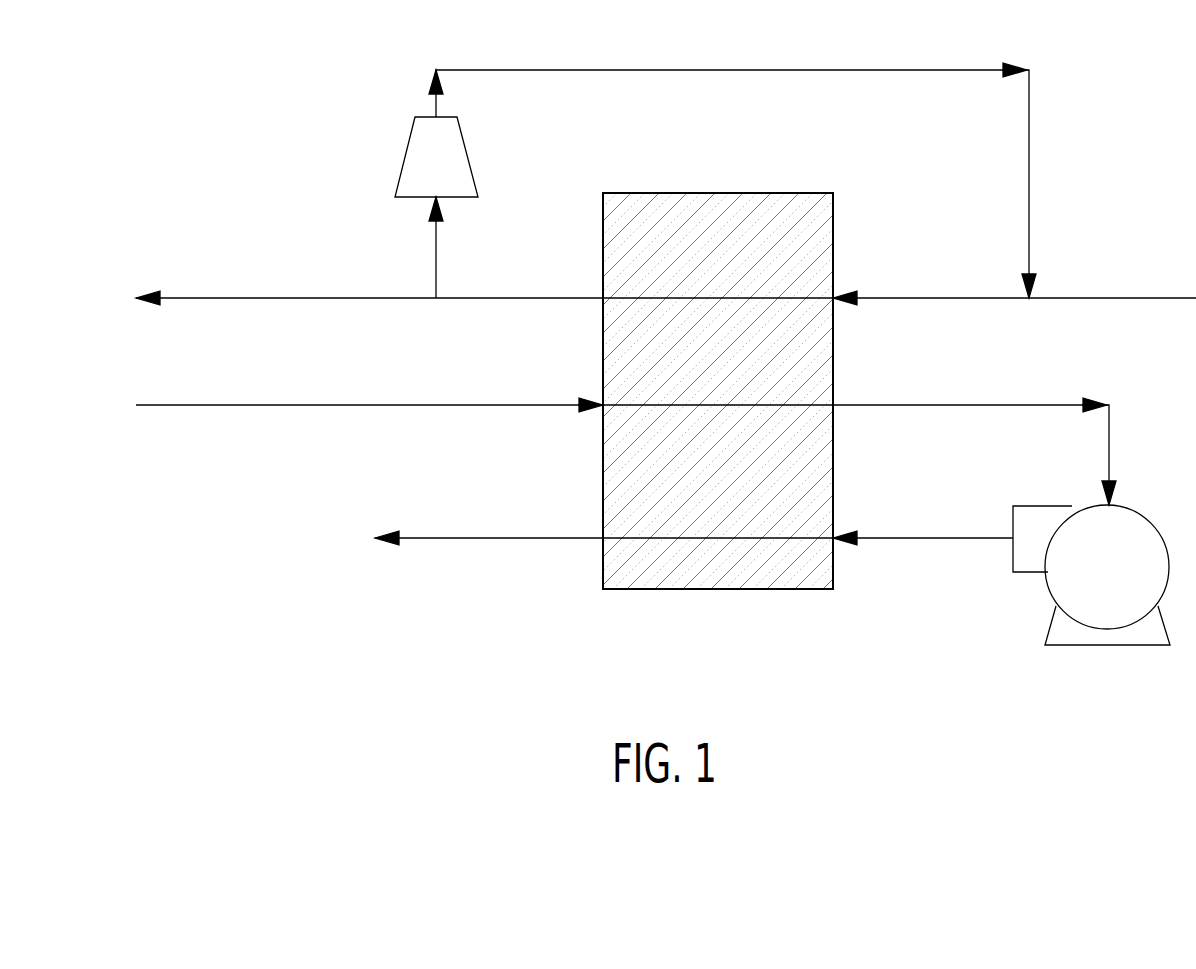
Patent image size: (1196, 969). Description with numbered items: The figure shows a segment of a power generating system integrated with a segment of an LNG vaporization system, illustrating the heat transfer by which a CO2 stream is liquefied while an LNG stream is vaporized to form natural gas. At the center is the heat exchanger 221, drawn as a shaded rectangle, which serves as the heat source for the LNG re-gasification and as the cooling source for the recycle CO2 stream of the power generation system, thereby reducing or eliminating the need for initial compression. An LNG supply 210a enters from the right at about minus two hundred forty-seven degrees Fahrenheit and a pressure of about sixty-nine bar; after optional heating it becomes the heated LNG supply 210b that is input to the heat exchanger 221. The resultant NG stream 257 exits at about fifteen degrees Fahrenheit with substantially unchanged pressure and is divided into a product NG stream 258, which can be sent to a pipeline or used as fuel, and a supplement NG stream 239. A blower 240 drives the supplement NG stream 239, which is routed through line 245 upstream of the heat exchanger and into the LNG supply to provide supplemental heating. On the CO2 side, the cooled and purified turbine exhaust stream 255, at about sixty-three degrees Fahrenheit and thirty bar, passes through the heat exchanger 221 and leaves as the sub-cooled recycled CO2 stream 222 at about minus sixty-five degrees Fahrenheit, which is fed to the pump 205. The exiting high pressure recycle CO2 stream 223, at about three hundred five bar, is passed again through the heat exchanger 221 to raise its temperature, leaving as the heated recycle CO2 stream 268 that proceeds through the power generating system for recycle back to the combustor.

The pump 205 is at (1120, 582).
The LNG supply 210a is at (1108, 298).
The heated LNG supply 210b is at (978, 298).
The heat exchanger 221 is at (740, 371).
The sub-cooled recycled CO2 stream 222 is at (963, 405).
The high pressure recycle CO2 stream 223 is at (928, 538).
The supplement NG stream 239 is at (434, 264).
The blower 240 is at (450, 170).
The expanded stream 245 is at (638, 70).
The cooled and purified turbine exhaust stream 255 is at (333, 405).
The NG stream 257 is at (515, 298).
The product NG stream 258 is at (256, 298).
The warmed refrigerant outlet stream 268 is at (460, 538).